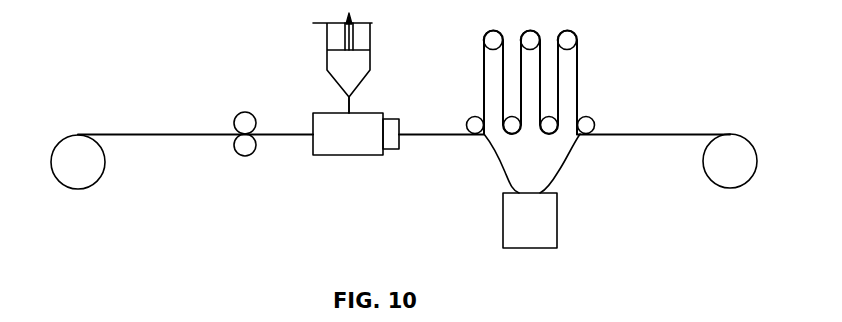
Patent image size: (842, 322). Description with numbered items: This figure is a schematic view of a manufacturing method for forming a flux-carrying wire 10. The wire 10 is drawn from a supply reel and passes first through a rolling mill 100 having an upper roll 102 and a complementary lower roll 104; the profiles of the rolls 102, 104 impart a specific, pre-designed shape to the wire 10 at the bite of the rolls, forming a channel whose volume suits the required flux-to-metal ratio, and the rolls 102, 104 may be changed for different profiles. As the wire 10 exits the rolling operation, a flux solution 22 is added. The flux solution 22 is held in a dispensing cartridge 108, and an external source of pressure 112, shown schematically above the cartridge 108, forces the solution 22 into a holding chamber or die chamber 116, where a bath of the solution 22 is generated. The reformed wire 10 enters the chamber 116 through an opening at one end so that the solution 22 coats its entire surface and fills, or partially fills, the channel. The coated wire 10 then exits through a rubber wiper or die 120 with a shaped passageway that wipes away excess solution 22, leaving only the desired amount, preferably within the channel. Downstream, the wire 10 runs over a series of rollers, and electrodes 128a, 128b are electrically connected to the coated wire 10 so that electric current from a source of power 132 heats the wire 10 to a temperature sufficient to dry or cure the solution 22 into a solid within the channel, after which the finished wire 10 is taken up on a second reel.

The wire 10 is at (150, 133).
The rolling mill 100 is at (228, 108).
The upper roll 102 is at (248, 113).
The lower roll 104 is at (248, 155).
The dispensing cartridge 108 is at (372, 67).
The external source of pressure 112 is at (350, 44).
The flux solution 22 is at (350, 110).
The die chamber 116 is at (368, 155).
The rubber wiper or die 120 is at (393, 150).
The electrode 128a is at (490, 149).
The electrode 128b is at (575, 150).
The source of power 132 is at (557, 233).